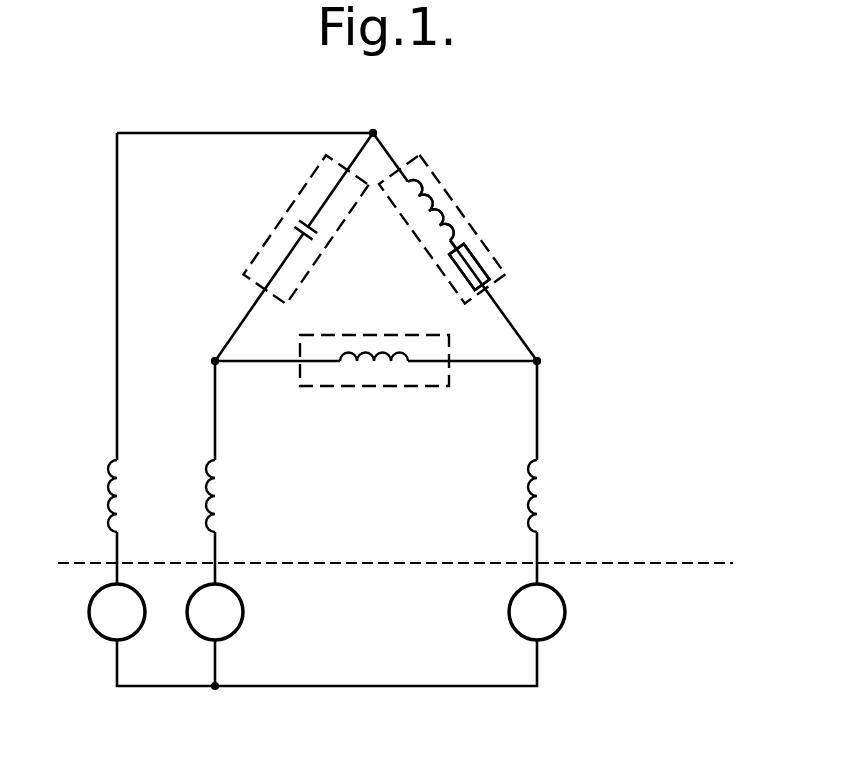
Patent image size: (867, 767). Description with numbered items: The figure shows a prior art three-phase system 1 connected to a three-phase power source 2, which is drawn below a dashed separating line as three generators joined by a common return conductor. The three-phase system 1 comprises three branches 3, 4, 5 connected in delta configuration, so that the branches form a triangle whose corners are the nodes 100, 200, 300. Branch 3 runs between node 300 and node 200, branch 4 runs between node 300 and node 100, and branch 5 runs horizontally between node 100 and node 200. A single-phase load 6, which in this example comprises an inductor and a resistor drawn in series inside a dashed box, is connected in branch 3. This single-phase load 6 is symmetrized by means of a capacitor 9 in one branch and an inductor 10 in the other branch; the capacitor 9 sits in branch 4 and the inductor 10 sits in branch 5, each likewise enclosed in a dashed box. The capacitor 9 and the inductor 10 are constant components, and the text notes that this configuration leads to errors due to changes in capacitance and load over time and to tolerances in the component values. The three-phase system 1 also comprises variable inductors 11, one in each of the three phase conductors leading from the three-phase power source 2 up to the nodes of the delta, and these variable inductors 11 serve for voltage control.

The three-phase system 1 is at (393, 339).
The three-phase power source 2 is at (626, 642).
The branch 3 is at (463, 246).
The branch 4 is at (308, 178).
The branch 5 is at (355, 387).
The single-phase load 6 is at (417, 237).
The capacitor 9 is at (295, 232).
The inductor 10 is at (363, 354).
The variable inductors 11 is at (108, 485).
The first node 100 is at (183, 361).
The second node 200 is at (568, 361).
The third node 300 is at (370, 116).